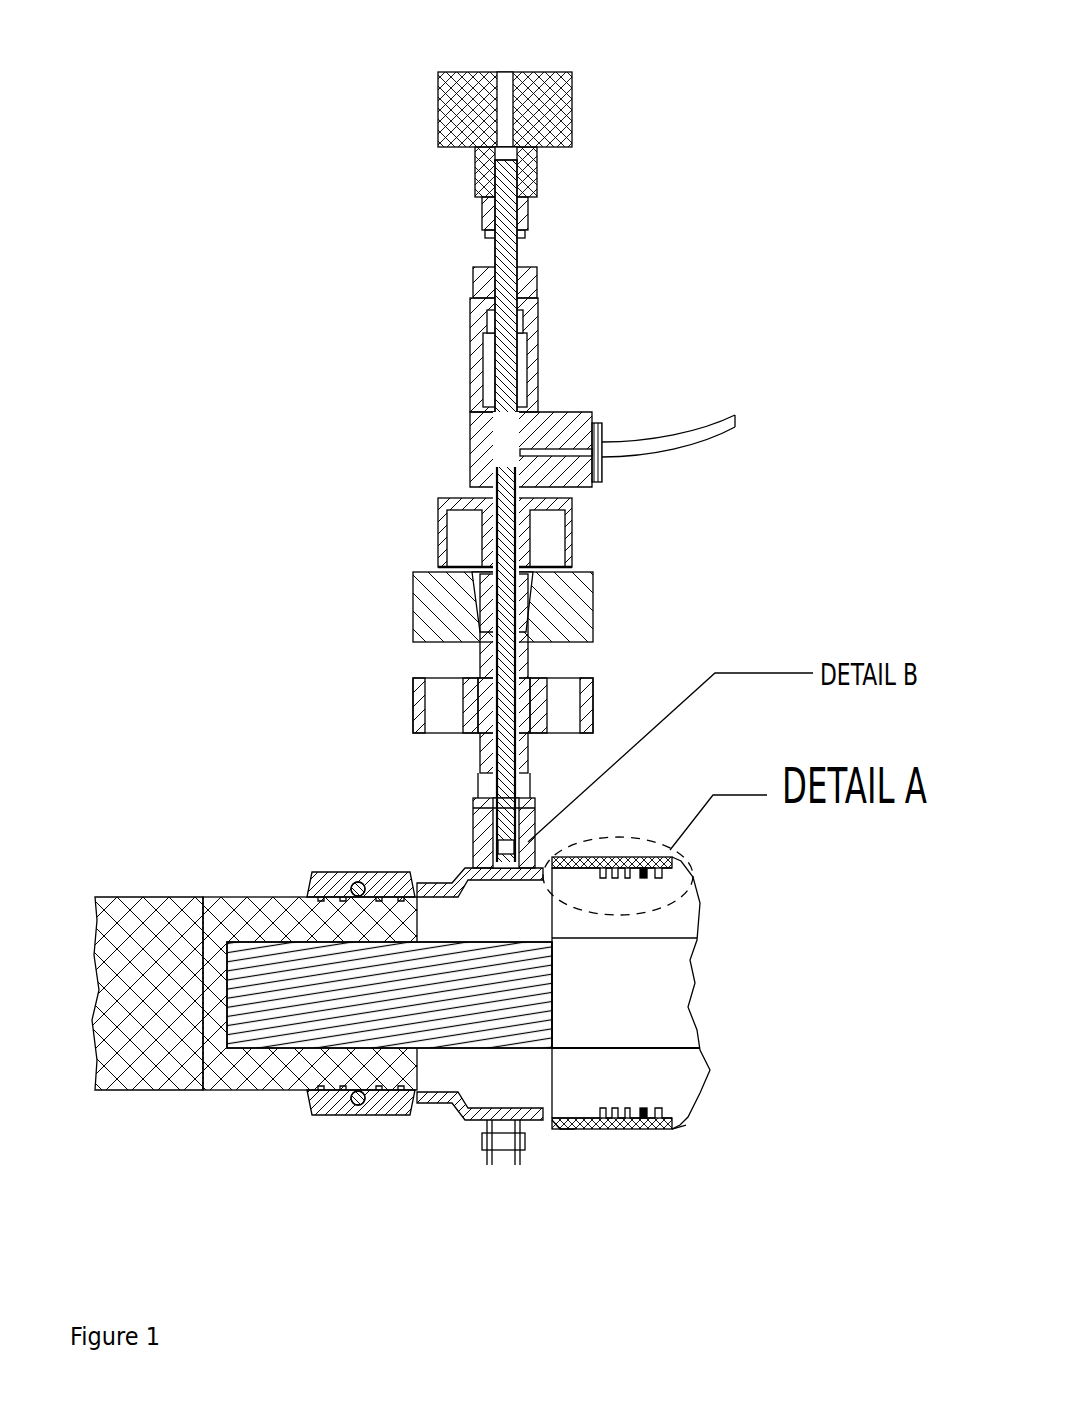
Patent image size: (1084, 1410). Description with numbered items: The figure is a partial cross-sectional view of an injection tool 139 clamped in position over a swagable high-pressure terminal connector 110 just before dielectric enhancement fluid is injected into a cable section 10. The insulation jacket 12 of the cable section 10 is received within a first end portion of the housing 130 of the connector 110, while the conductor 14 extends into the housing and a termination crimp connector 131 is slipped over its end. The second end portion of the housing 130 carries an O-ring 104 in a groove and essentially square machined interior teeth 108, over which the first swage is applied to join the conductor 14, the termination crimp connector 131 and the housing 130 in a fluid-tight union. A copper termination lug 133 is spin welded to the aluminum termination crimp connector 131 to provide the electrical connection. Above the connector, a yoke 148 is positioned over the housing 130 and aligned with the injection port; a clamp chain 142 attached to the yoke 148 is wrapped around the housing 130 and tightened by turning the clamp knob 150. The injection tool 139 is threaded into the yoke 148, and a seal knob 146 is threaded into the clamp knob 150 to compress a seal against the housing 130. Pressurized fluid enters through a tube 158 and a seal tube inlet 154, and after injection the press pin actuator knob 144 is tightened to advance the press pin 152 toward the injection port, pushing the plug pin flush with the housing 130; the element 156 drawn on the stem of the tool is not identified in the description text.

The cable section 10 is at (685, 1124).
The insulation jacket 12 is at (690, 922).
The conductor 14 is at (545, 1122).
The O-ring 104 is at (359, 884).
The interior teeth 108 is at (325, 872).
The connector 110 is at (374, 1129).
The housing 130 is at (558, 1133).
The termination crimp connector 131 is at (303, 1092).
The termination lug 133 is at (160, 1068).
The injection tool 139 is at (317, 564).
The clamp chain 142 is at (484, 1156).
The press pin actuator knob 144 is at (455, 72).
The seal knob 146 is at (572, 540).
The yoke 148 is at (593, 693).
The clamp knob 150 is at (413, 592).
The press pin 152 is at (500, 553).
The seal tube inlet 154 is at (470, 435).
The stem collar 156 is at (520, 228).
The tube 158 is at (646, 447).